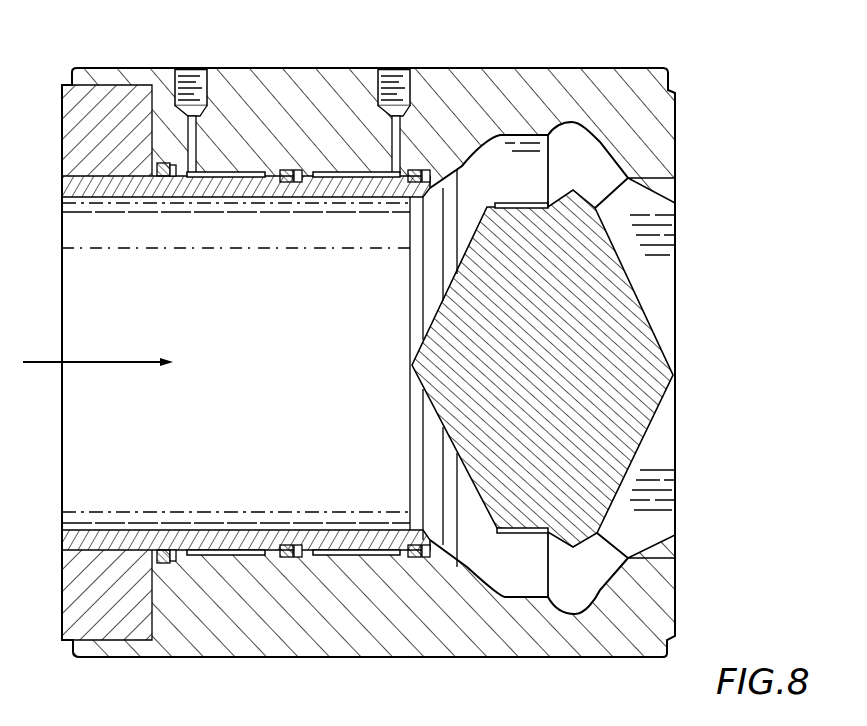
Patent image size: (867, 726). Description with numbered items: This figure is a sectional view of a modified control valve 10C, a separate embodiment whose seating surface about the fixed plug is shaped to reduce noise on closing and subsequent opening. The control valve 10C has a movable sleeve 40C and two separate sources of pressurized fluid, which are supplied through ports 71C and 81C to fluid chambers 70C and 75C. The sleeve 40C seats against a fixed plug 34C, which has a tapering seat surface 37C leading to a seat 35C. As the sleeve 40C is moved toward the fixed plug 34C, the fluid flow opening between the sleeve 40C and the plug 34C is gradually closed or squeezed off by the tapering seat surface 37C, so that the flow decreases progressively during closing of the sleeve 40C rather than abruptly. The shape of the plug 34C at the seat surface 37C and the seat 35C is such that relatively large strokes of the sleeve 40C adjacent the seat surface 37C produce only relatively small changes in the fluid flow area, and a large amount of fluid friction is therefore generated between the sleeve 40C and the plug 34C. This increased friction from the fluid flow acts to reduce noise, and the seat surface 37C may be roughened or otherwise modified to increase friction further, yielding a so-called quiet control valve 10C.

The control valve 10C is at (314, 62).
The port 81C is at (192, 78).
The port 71C is at (403, 80).
The fluid chamber 75C is at (215, 200).
The sleeve 40C is at (297, 200).
The fluid chamber 70C is at (370, 195).
The fixed plug 34C is at (440, 381).
The tapering seat surface 37C is at (513, 533).
The seat 35C is at (565, 540).